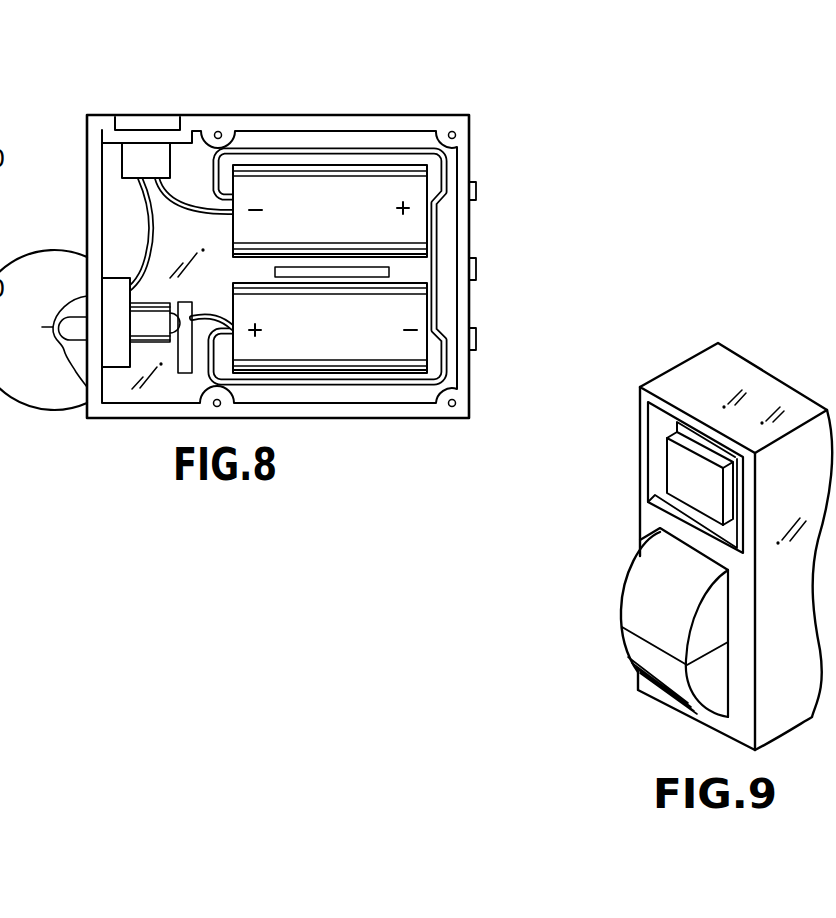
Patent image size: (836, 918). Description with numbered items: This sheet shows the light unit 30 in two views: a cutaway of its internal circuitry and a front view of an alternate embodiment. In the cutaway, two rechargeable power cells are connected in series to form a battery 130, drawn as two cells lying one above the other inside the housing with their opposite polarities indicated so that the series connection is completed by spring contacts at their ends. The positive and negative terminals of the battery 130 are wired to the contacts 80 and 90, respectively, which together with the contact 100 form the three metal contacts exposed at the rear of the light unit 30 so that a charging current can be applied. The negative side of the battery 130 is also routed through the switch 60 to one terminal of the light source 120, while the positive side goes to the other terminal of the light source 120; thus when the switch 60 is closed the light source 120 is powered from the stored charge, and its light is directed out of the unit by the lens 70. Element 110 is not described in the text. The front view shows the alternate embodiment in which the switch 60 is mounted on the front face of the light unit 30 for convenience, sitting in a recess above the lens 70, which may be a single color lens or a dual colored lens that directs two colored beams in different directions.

In FIG. 8, the light unit 30 is at (385, 69).
In FIG. 9, the light unit 30 is at (669, 319).
In FIG. 9, the switch 60 is at (678, 476).
In FIG. 8, the lens 70 is at (50, 298).
In FIG. 9, the lens 70 is at (640, 607).
In FIG. 8, the metal contact 80 is at (476, 189).
In FIG. 8, the metal contact 90 is at (476, 268).
In FIG. 8, the metal contact 100 is at (476, 333).
In FIG. 8, the lamp block 110 is at (177, 218).
In FIG. 8, the light source 120 is at (63, 347).
In FIG. 8, the battery 130 is at (305, 180).